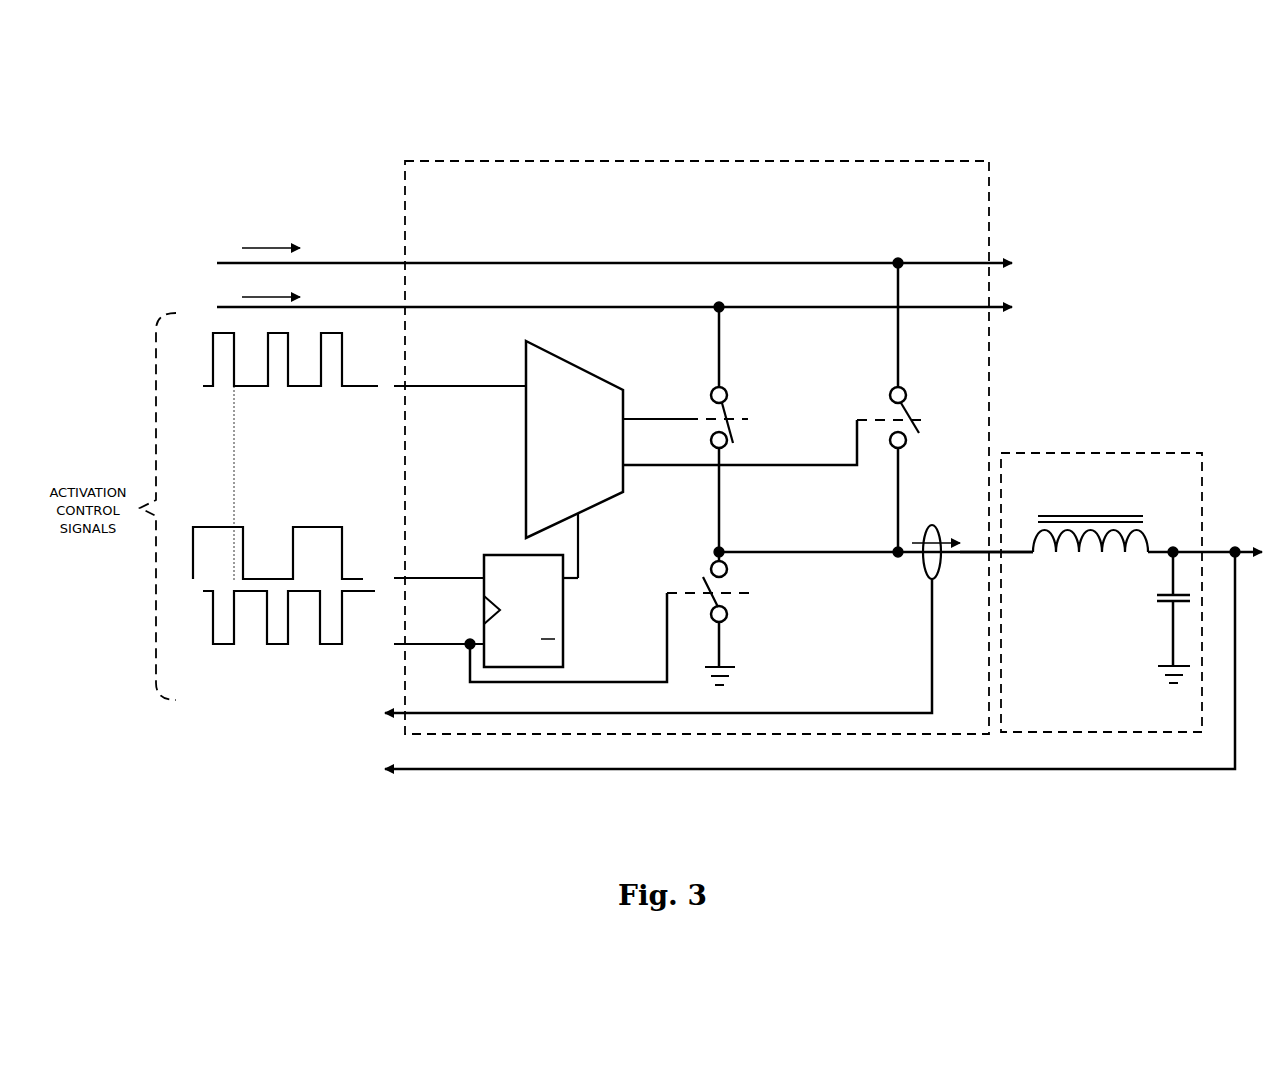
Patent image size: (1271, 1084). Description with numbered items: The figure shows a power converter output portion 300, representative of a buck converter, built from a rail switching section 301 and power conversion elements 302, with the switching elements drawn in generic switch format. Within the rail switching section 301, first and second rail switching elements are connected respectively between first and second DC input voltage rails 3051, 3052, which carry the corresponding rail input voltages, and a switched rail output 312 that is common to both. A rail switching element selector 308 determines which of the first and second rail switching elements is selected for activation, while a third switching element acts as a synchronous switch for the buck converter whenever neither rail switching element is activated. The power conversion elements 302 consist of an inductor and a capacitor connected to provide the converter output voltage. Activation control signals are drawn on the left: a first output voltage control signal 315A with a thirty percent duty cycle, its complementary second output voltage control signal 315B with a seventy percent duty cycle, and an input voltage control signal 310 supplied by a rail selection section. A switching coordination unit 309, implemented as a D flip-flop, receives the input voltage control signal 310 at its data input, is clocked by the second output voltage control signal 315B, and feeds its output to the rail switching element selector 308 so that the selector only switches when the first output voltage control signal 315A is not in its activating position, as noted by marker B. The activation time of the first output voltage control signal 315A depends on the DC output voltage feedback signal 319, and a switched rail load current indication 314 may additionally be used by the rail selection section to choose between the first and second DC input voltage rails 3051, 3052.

The power converter output portion 300 is at (1198, 128).
The rail switching section 301 is at (848, 160).
The power conversion elements 302 is at (1052, 452).
The first DC input voltage rail 3051 is at (588, 306).
The second DC input voltage rail 3052 is at (517, 262).
The rail switching element selector 308 is at (586, 368).
The switching coordination unit 309 is at (563, 630).
The input voltage control signal 310 is at (259, 520).
The switched rail output 312 is at (983, 556).
The switched rail load current indication 314 is at (773, 712).
The first output voltage control signal 315A is at (316, 394).
The second output voltage control signal 315B is at (265, 655).
The DC output voltage feedback signal 319 is at (858, 769).